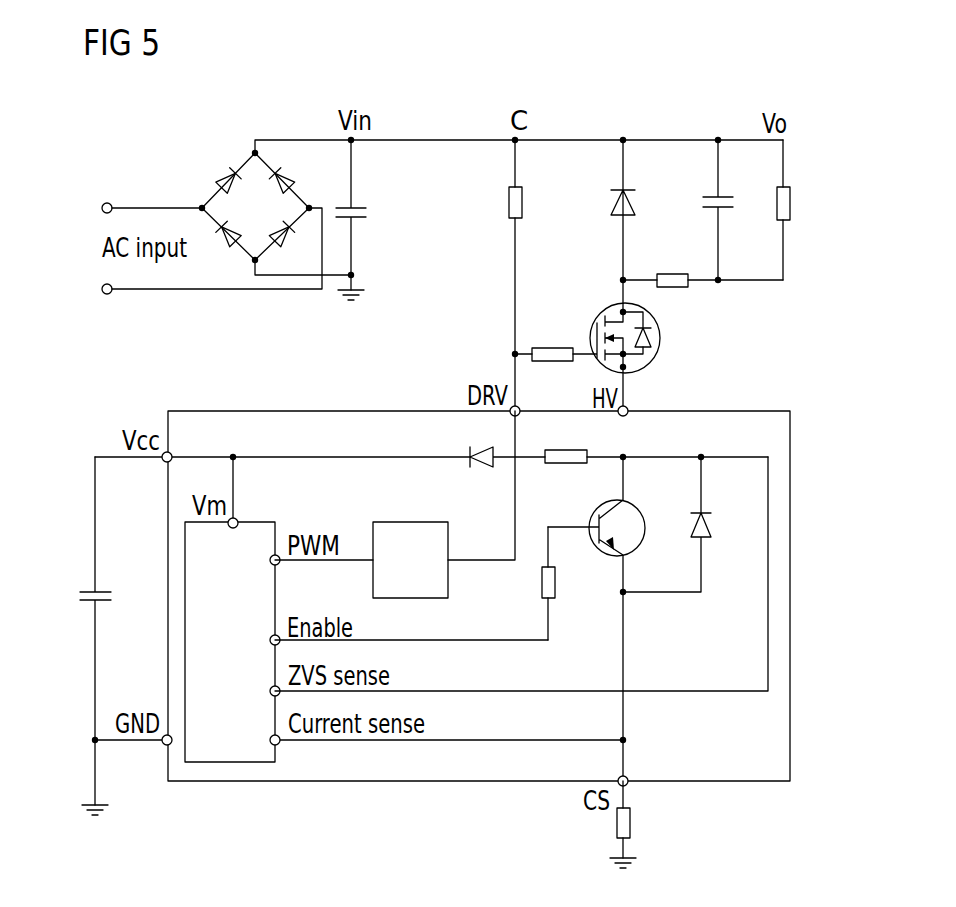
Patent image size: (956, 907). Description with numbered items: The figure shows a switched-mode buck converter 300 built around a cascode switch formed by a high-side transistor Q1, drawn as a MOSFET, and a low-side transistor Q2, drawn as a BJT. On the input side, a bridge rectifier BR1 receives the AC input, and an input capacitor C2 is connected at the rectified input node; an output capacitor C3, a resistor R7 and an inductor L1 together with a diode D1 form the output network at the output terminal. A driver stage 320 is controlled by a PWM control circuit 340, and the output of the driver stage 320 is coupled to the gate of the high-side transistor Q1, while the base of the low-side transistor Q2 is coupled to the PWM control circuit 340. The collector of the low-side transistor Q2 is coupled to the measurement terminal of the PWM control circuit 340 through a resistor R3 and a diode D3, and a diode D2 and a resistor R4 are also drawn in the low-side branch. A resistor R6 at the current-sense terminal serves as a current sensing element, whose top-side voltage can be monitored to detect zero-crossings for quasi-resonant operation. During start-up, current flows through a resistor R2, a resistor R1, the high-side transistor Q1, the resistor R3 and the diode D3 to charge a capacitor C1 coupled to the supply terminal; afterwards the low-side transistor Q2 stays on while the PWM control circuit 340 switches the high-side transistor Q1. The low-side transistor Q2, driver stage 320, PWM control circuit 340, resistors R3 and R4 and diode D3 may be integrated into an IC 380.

The switched-mode buck converter 300 is at (733, 101).
The IC 380 is at (392, 410).
The PWM control circuit 340 is at (262, 521).
The driver stage 320 is at (410, 521).
The bridge rectifier BR1 is at (212, 162).
The capacitor C1 is at (111, 636).
The input capacitor C2 is at (366, 218).
The output capacitor C3 is at (735, 210).
The resistor R1 is at (544, 340).
The resistor R2 is at (531, 274).
The resistor R3 is at (656, 477).
The resistor R4 is at (565, 583).
The resistor R6 is at (636, 824).
The load resistor R7 is at (798, 210).
The diode D1 is at (638, 210).
The diode D2 is at (685, 524).
The diode D3 is at (507, 475).
The inductor L1 is at (703, 265).
The high-side transistor Q1 is at (633, 346).
The low-side transistor Q2 is at (612, 619).